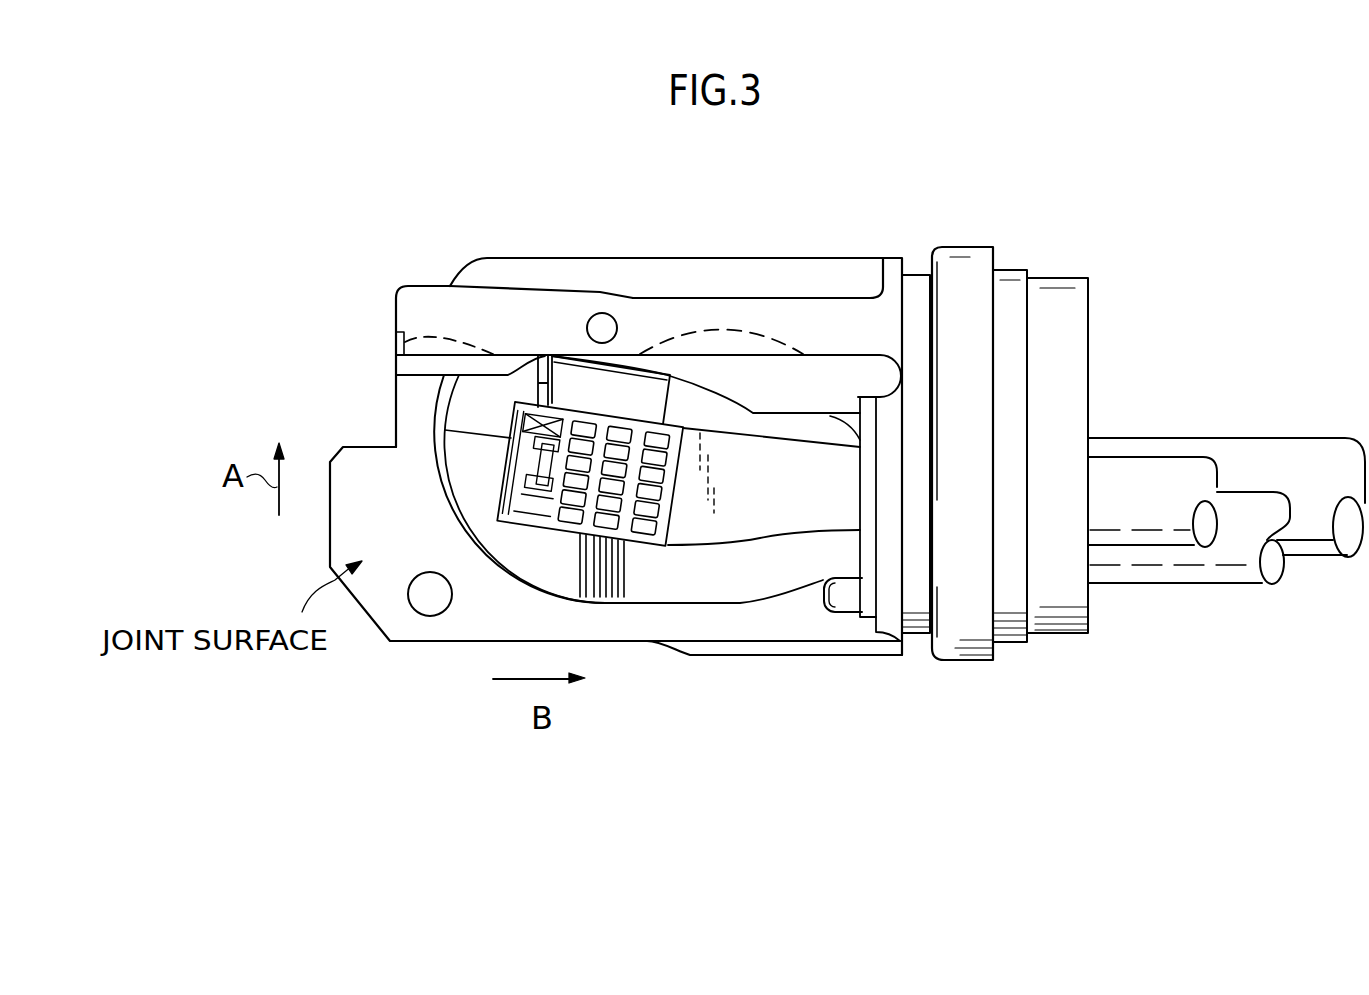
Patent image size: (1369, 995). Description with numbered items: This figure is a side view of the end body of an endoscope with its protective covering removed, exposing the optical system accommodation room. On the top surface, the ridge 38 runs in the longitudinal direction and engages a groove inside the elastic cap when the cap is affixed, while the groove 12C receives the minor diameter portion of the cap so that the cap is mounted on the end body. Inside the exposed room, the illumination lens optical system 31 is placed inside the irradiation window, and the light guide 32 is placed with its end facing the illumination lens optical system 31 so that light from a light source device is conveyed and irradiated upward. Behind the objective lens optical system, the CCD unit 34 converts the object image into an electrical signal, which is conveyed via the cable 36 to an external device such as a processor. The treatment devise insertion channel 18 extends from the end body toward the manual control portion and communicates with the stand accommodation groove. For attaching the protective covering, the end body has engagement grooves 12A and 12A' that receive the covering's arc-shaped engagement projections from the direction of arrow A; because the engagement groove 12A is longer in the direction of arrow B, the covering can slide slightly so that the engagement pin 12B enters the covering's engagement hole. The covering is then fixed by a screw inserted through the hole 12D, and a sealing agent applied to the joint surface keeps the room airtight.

The illumination lens optical system 31 is at (470, 394).
The ridge 38 is at (570, 258).
The engagement groove 12A is at (721, 269).
The engagement groove 12A' is at (432, 284).
The groove 12C is at (917, 268).
The engagement pin 12B is at (845, 598).
The hole 12D is at (440, 611).
The CCD unit 34 is at (645, 540).
The light guide 32 is at (753, 587).
The cable 36 is at (1153, 477).
The treatment devise insertion channel 18 is at (1327, 453).